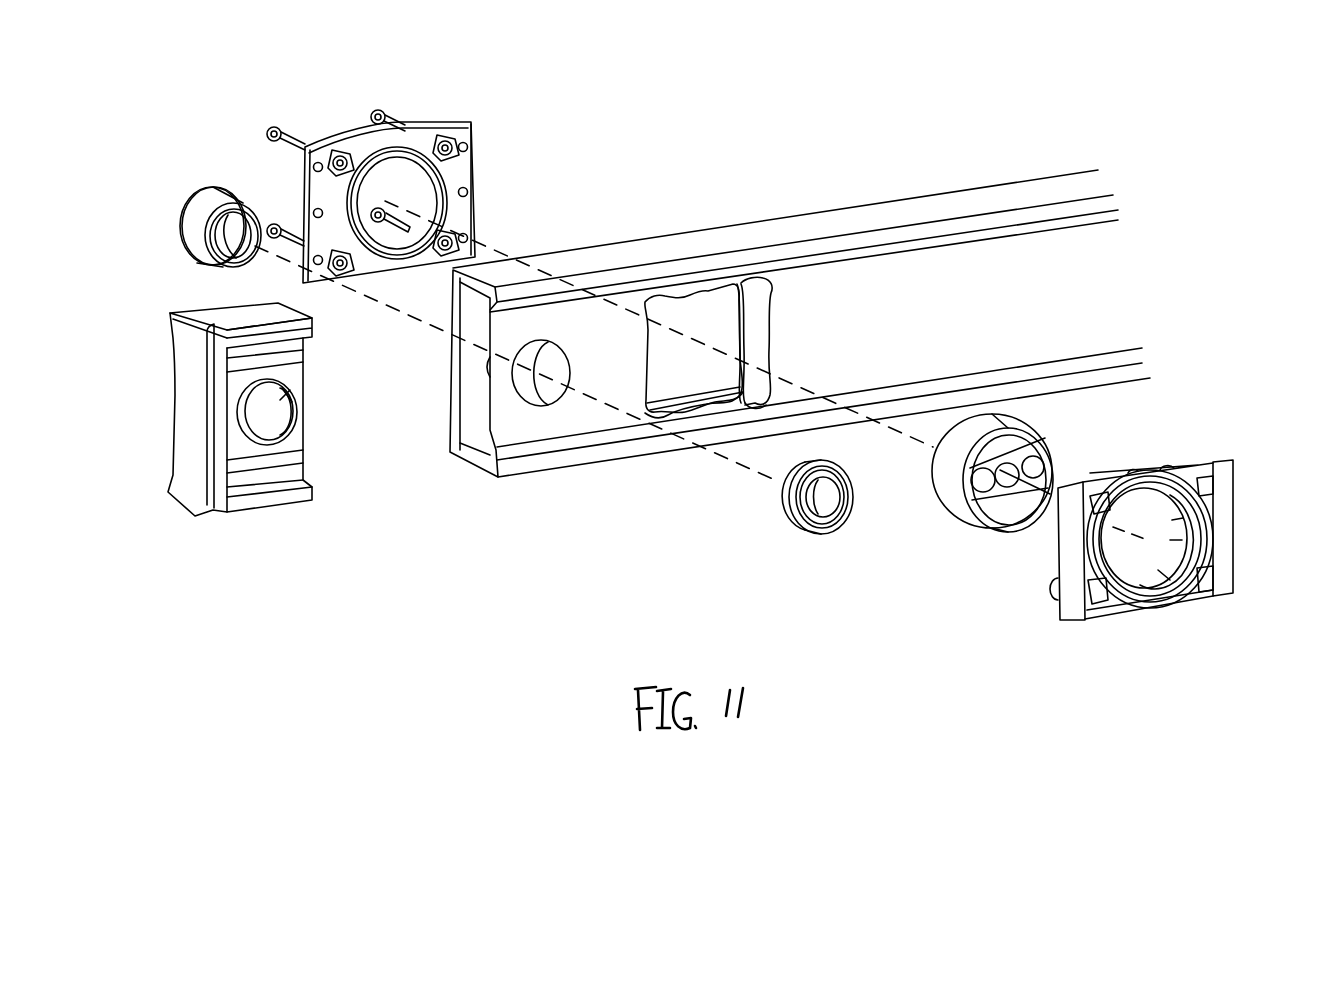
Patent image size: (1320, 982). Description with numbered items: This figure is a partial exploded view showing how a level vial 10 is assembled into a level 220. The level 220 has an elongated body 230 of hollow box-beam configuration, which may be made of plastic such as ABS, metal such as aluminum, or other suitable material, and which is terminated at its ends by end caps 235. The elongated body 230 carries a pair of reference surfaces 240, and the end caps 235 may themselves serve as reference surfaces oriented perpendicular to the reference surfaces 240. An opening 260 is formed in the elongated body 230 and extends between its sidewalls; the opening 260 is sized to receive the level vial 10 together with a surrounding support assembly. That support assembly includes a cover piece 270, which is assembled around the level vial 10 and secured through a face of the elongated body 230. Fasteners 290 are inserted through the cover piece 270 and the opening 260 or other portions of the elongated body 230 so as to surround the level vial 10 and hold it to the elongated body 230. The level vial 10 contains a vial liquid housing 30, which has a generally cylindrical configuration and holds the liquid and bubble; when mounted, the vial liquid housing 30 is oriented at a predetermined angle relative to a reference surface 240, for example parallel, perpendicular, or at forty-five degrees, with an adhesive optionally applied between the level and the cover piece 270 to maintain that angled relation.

The level vial 10 is at (981, 511).
The vial liquid housing 30 is at (1015, 463).
The level 220 is at (593, 223).
The elongated body 230 is at (362, 137).
The end caps 235 is at (188, 457).
The reference surfaces 240 is at (822, 223).
The opening 260 is at (699, 307).
The cover piece 270 is at (1225, 593).
The fasteners 290 is at (299, 129).